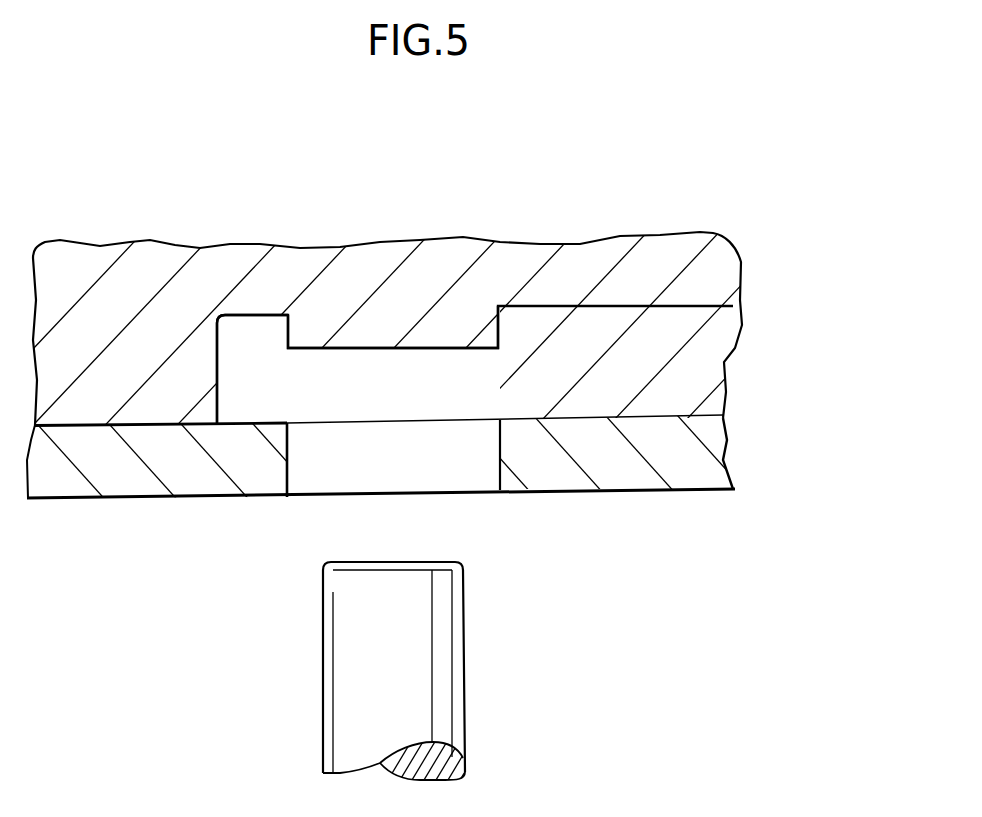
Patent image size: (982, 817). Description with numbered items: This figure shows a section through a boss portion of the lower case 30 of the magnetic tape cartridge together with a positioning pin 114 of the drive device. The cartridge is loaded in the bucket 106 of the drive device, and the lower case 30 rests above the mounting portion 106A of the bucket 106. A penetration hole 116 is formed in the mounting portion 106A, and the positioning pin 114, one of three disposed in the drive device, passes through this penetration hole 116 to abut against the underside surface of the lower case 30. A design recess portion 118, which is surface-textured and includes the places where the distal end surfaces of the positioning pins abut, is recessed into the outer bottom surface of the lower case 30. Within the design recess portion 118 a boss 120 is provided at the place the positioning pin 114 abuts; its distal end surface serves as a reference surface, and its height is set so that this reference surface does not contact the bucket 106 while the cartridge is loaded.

The lower case 30 is at (727, 275).
The bucket 106 is at (438, 485).
The mounting portion 106A is at (642, 478).
The positioning pin 114 is at (442, 677).
The penetration hole 116 is at (500, 475).
The design recess portion 118 is at (253, 317).
The boss 120 is at (378, 350).